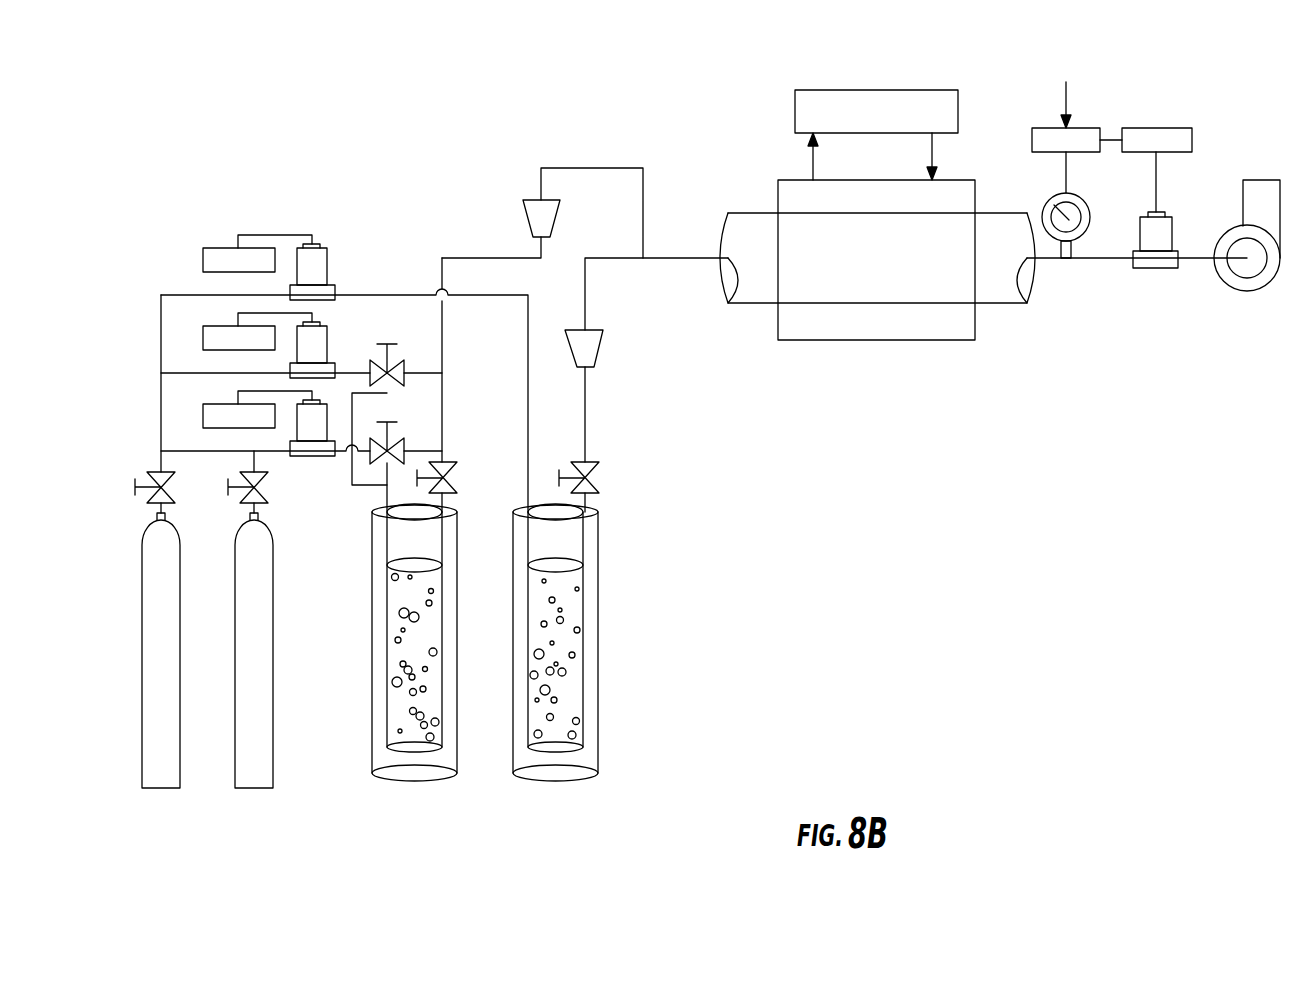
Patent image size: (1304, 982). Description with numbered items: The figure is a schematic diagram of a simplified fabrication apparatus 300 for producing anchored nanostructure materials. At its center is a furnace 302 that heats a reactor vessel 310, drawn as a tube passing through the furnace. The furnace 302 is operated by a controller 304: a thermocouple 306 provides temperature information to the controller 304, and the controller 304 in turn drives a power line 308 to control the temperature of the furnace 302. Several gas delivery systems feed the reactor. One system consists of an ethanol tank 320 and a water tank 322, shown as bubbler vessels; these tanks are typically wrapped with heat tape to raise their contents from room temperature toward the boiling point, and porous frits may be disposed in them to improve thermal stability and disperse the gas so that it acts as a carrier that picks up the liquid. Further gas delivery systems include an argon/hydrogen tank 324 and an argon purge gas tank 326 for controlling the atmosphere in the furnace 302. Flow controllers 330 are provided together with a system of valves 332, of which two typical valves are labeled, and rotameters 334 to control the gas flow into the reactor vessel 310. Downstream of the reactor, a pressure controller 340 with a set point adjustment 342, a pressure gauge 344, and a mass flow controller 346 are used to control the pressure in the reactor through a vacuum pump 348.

The apparatus 300 is at (306, 110).
The furnace 302 is at (778, 205).
The controller 304 is at (878, 88).
The thermocouple 306 is at (813, 165).
The power line 308 is at (935, 155).
The reactor vessel 310 is at (720, 240).
The ethanol tank 320 is at (568, 782).
The water tank 322 is at (427, 782).
The argon/hydrogen tank 324 is at (250, 790).
The argon purge gas tank 326 is at (157, 790).
The flow controllers 330 is at (297, 427).
The valves 332 is at (405, 437).
The rotameters 334 is at (521, 212).
The pressure controller 340 is at (1093, 127).
The set point adjustment 342 is at (1066, 95).
The pressure gauge 344 is at (1077, 240).
The mass flow controller 346 is at (1175, 223).
The vacuum pump 348 is at (1248, 292).